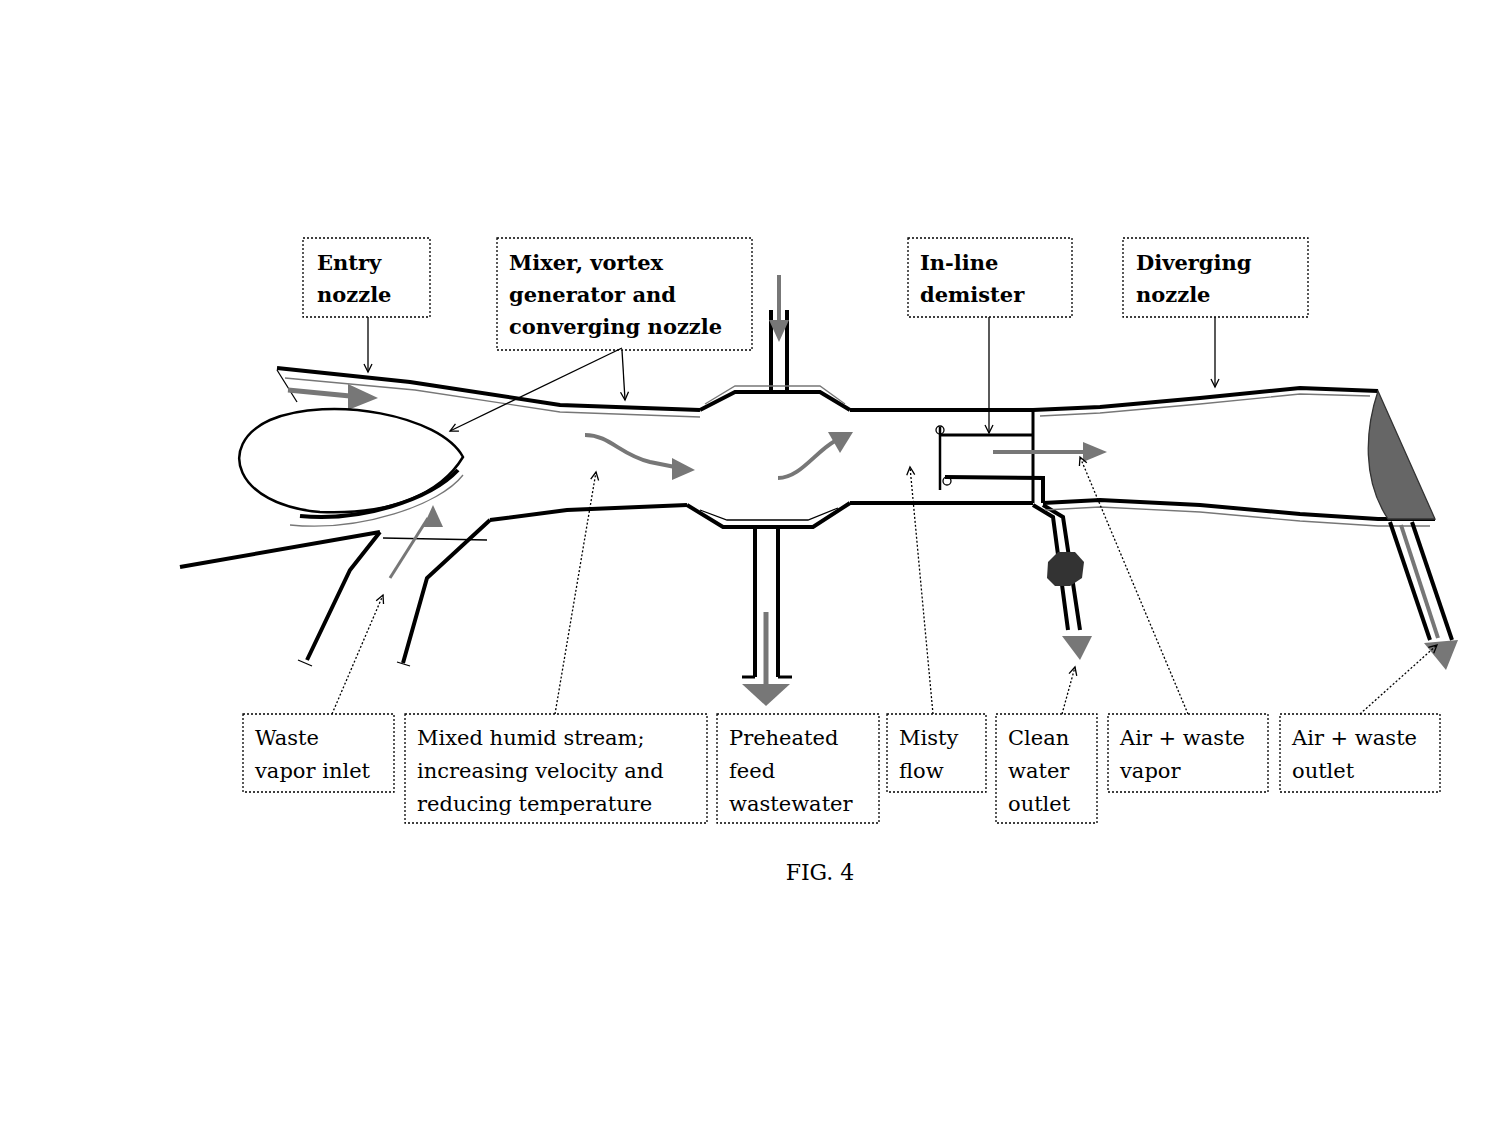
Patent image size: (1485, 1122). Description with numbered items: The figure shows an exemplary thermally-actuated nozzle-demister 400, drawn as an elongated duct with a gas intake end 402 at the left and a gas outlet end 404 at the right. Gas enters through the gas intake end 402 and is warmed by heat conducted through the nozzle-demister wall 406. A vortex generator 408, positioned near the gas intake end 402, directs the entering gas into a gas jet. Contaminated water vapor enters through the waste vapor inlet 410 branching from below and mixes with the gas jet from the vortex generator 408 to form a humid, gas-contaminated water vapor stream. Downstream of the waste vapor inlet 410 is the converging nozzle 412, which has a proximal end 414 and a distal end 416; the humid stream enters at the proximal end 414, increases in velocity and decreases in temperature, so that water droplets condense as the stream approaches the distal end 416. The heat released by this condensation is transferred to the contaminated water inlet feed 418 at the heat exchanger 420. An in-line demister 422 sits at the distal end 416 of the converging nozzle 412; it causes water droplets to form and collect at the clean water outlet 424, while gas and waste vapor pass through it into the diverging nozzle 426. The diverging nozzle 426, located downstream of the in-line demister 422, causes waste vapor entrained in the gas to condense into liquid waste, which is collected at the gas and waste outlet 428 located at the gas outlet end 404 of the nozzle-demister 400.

The thermally-actuated nozzle-demister 400 is at (255, 220).
The gas intake end 402 is at (297, 400).
The gas outlet end 404 is at (1378, 392).
The nozzle-demister wall 406 is at (407, 383).
The vortex generator 408 is at (297, 490).
The waste vapor inlet 410 is at (397, 623).
The converging nozzle 412 is at (738, 445).
The proximal end 414 is at (637, 475).
The distal end 416 is at (1025, 407).
The contaminated water inlet feed 418 is at (792, 397).
The heat exchanger 420 is at (780, 397).
The in-line demister 422 is at (962, 433).
The clean water outlet 424 is at (1063, 603).
The diverging nozzle 426 is at (1252, 462).
The gas and waste outlet 428 is at (1383, 537).